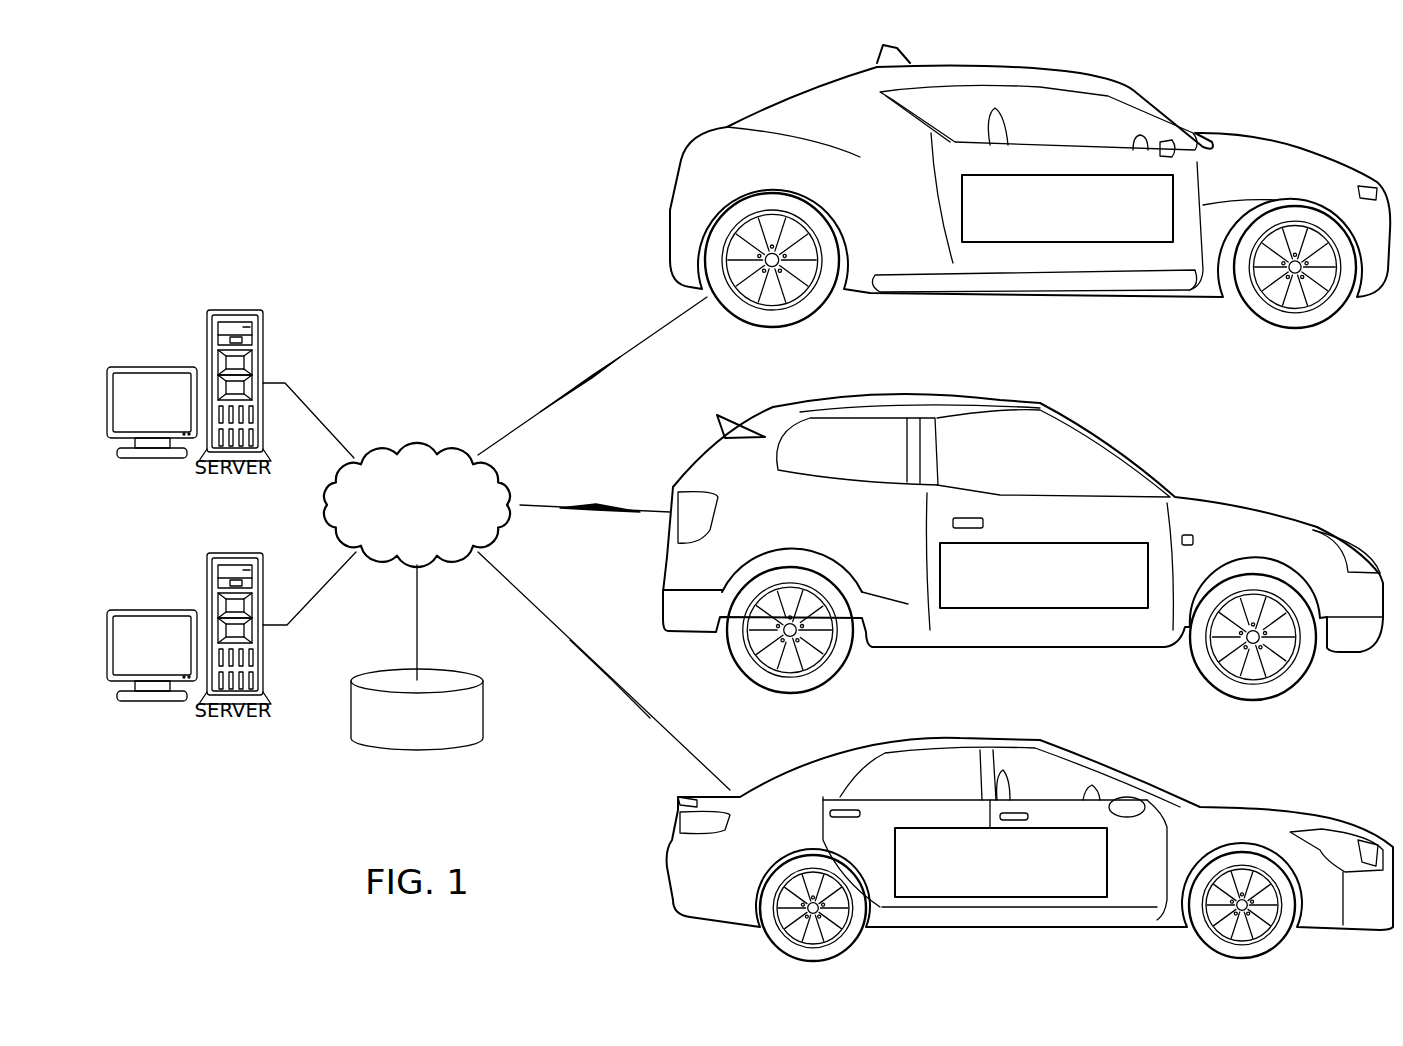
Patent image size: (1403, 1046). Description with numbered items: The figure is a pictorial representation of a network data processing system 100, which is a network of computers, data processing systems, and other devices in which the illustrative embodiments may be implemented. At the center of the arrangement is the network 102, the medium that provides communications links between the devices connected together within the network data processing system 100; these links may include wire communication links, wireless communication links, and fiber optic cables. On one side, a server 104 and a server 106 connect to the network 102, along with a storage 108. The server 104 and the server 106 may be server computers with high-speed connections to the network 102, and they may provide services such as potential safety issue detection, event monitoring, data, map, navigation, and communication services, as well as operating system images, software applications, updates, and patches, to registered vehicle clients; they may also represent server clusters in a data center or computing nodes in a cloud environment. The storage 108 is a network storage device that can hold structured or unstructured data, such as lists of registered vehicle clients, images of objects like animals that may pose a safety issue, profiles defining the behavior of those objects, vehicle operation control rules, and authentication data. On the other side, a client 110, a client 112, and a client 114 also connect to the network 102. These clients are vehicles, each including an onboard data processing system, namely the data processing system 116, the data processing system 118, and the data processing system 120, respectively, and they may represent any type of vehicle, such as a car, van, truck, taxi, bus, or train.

The network data processing system 100 is at (366, 117).
The network 102 is at (410, 448).
The server 104 is at (152, 366).
The server 106 is at (154, 702).
The storage 108 is at (407, 750).
The client 110 is at (1293, 143).
The client 112 is at (1107, 438).
The client 114 is at (1130, 773).
The data processing system 116 is at (962, 207).
The data processing system 118 is at (940, 562).
The data processing system 120 is at (1110, 863).